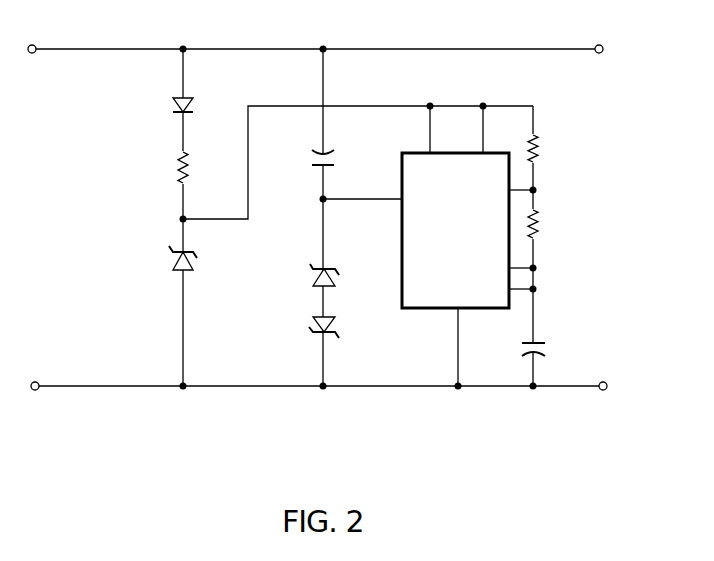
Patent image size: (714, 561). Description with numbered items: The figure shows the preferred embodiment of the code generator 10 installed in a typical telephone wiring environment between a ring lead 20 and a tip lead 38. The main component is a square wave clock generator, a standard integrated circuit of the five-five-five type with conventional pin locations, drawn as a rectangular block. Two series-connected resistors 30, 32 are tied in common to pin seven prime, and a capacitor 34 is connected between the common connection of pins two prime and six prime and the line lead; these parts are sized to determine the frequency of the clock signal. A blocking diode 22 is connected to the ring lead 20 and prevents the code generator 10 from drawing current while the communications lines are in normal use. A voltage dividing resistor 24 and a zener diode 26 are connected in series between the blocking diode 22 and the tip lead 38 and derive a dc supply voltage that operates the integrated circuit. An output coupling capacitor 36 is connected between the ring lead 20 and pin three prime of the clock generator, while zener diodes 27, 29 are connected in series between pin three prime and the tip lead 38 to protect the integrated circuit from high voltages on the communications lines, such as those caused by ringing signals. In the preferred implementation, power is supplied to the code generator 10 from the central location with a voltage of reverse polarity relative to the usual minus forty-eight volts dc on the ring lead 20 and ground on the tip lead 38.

The code generator 10 is at (306, 393).
The ring lead 20 is at (47, 28).
The blocking diode 22 is at (193, 107).
The voltage dividing resistor 24 is at (192, 168).
The zener diode 26 is at (198, 264).
The zener diode 27 is at (312, 278).
The zener diode 29 is at (312, 320).
The resistor 30 is at (539, 150).
The resistor 32 is at (539, 230).
The capacitor 34 is at (522, 348).
The output coupling capacitor 36 is at (307, 161).
The tip lead 38 is at (33, 391).